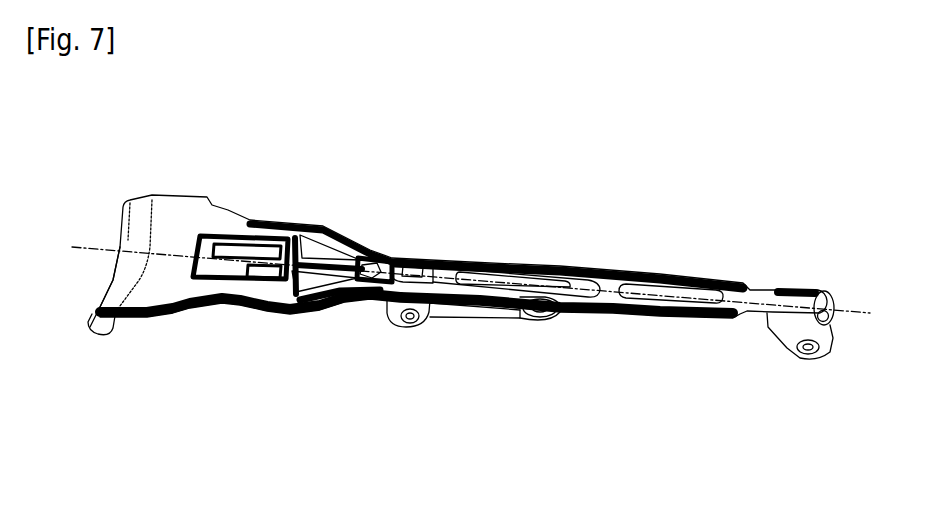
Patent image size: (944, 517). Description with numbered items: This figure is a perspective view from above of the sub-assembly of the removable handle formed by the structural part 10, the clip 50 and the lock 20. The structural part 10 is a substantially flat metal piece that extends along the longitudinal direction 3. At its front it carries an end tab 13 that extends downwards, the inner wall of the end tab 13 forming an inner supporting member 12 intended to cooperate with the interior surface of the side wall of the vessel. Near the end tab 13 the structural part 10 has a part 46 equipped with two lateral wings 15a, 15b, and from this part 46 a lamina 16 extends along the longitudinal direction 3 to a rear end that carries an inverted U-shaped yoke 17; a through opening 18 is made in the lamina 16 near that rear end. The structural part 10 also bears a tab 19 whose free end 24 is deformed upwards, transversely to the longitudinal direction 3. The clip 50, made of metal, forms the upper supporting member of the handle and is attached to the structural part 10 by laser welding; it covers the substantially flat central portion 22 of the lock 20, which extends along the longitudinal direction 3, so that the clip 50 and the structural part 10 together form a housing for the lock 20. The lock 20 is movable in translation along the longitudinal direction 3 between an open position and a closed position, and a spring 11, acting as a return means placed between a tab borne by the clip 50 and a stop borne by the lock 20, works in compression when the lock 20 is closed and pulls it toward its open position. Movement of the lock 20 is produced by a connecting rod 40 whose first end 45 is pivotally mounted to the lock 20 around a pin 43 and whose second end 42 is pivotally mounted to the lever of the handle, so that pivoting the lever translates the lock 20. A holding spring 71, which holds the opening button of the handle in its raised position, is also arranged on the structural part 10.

The longitudinal direction 3 is at (471, 355).
The structural part 10 is at (462, 238).
The spring 11 is at (336, 328).
The inner supporting member 12 is at (126, 303).
The end tab 13 is at (78, 353).
The lateral wing 15a is at (250, 372).
The lateral wing 15b is at (321, 186).
The lamina 16 is at (671, 246).
The inverted U-shaped yoke 17 is at (784, 370).
The through opening 18 is at (523, 241).
The tab 19 is at (243, 189).
The lock 20 is at (365, 285).
The central portion 22 is at (291, 204).
The free end 24 is at (214, 189).
The connecting rod 40 is at (524, 368).
The second end 42 is at (576, 366).
The pin 43 is at (430, 359).
The first end 45 is at (475, 363).
The part 46 is at (279, 352).
The clip 50 is at (335, 354).
The holding spring 71 is at (458, 208).